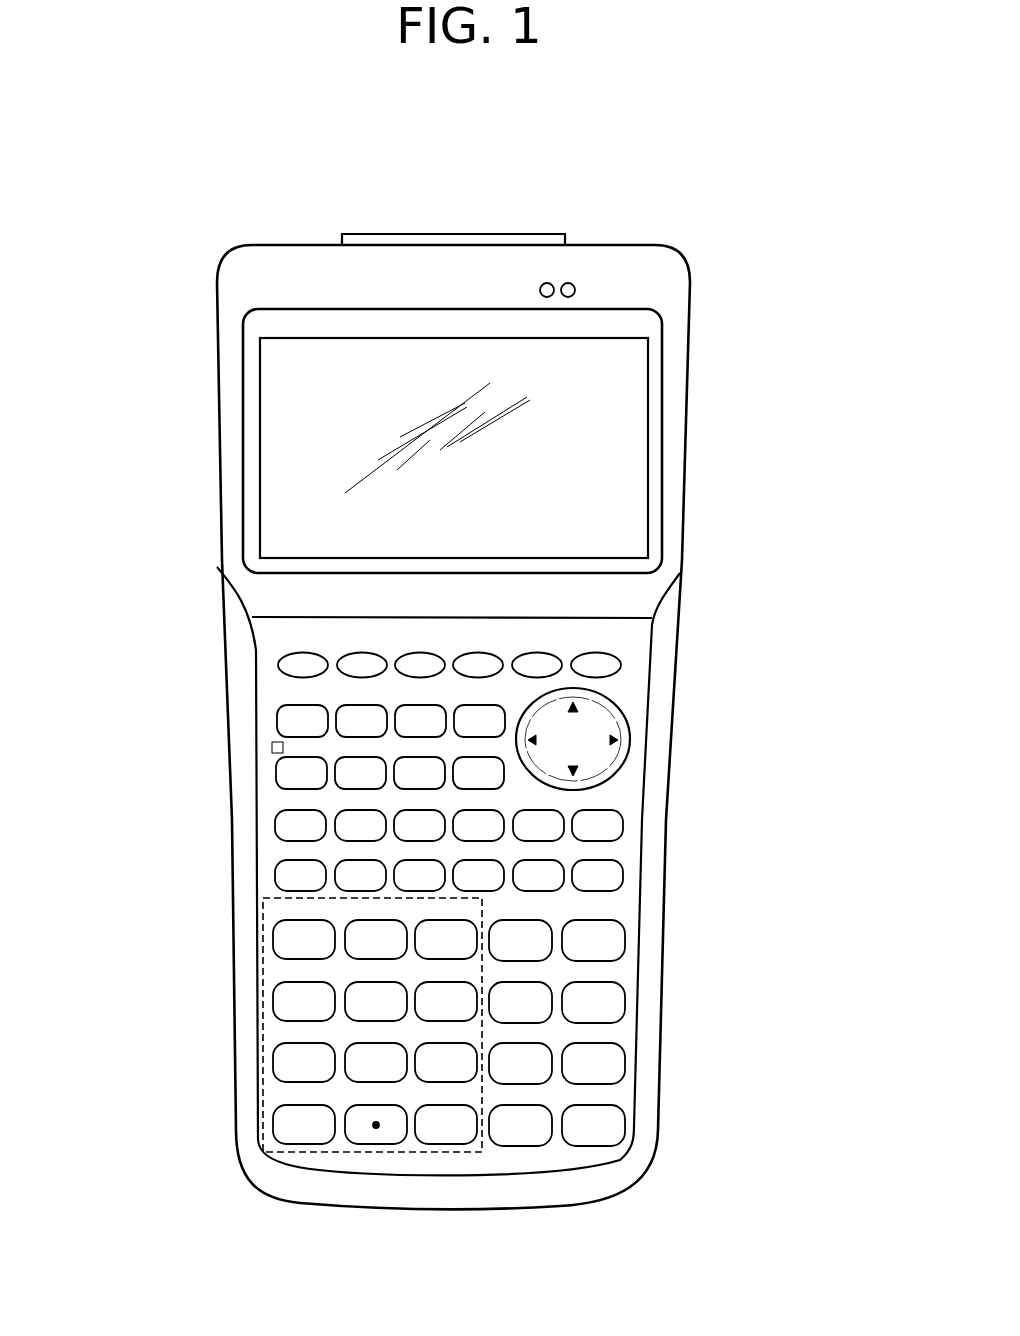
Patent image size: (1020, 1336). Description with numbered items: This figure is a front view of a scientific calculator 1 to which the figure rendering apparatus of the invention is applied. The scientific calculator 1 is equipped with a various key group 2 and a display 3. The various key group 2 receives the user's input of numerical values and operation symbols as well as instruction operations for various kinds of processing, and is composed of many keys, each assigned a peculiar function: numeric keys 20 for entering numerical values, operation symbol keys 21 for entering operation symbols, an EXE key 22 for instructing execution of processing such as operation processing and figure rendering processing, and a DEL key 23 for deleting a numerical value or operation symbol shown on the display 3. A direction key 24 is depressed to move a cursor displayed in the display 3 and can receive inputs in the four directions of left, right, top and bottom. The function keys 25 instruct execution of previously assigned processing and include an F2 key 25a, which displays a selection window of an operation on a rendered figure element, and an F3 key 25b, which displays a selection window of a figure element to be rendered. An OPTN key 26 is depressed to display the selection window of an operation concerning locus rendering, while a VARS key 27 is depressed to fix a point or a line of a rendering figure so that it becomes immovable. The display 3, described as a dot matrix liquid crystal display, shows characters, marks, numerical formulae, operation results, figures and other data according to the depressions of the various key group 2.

The scientific calculator 1 is at (186, 132).
The various key group 2 is at (108, 638).
The display 3 is at (260, 438).
The numeric keys 20 is at (258, 946).
The operation symbol keys 21 is at (625, 999).
The EXE key 22 is at (625, 1118).
The DEL key 23 is at (537, 918).
The direction key 24 is at (632, 733).
The function keys 25 is at (655, 627).
The F2 key 25a is at (338, 650).
The F3 key 25b is at (395, 657).
The OPTN key 26 is at (338, 706).
The VARS key 27 is at (397, 704).